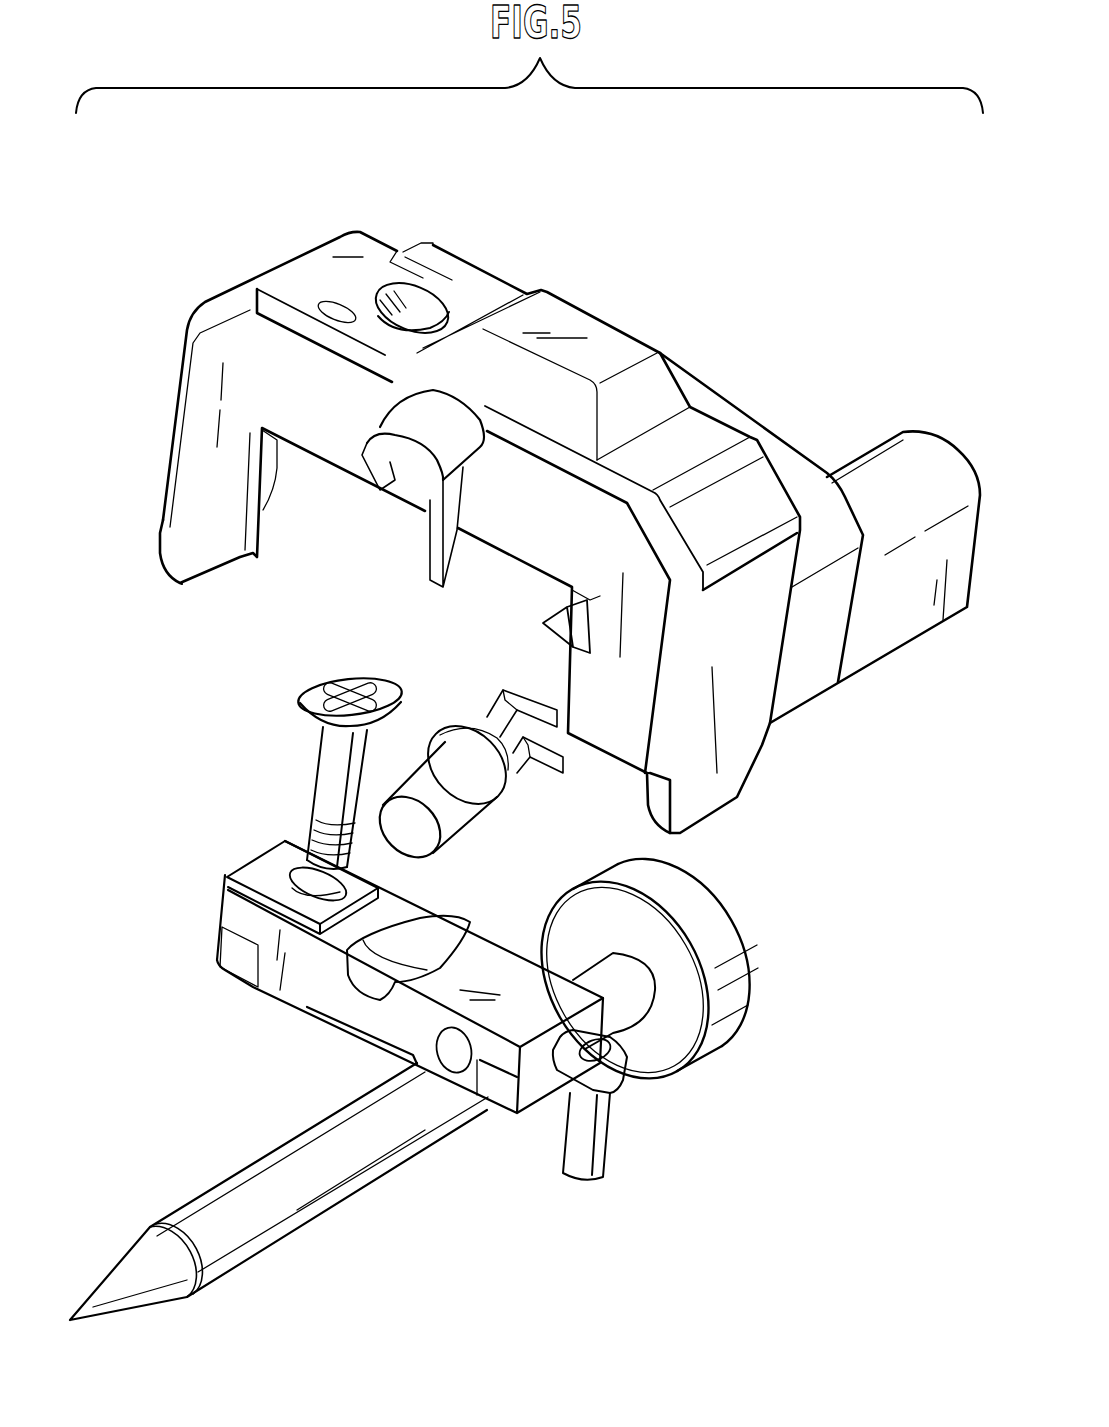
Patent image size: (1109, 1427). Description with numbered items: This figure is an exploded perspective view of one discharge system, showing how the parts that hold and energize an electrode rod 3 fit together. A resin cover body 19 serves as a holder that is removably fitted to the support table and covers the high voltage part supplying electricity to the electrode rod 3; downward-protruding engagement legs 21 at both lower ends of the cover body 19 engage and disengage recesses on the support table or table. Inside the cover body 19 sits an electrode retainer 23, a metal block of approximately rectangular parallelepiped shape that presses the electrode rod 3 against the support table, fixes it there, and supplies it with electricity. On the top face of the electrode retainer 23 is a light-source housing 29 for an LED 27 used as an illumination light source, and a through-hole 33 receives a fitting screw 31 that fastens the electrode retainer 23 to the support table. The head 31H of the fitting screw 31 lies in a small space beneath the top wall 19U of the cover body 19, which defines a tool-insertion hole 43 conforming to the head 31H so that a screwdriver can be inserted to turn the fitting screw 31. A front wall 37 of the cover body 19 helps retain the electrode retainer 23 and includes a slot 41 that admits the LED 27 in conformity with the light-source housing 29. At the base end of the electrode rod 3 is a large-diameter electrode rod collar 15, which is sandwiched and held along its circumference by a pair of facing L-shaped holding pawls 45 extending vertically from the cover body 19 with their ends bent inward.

The electrode rod 3 is at (357, 1187).
The electrode rod collar 15 is at (720, 1027).
The cover body 19 is at (735, 401).
The top wall 19U is at (467, 277).
The engagement legs 21 is at (173, 533).
The electrode retainer 23 is at (513, 970).
The LED 27 is at (463, 832).
The light-source housing 29 is at (367, 985).
The fitting screw 31 is at (328, 765).
The head 31H is at (315, 684).
The through-hole 33 is at (305, 883).
The front wall 37 is at (513, 540).
The slot 41 is at (423, 497).
The tool-insertion hole 43 is at (383, 293).
The holding pawls 45 is at (560, 650).